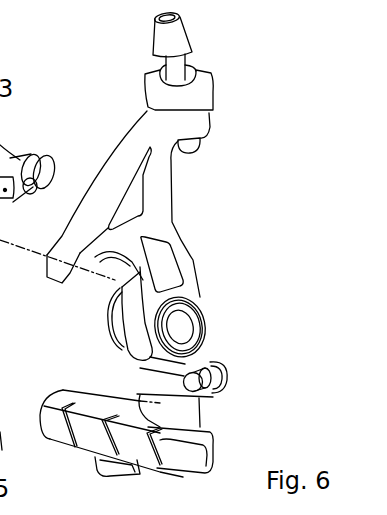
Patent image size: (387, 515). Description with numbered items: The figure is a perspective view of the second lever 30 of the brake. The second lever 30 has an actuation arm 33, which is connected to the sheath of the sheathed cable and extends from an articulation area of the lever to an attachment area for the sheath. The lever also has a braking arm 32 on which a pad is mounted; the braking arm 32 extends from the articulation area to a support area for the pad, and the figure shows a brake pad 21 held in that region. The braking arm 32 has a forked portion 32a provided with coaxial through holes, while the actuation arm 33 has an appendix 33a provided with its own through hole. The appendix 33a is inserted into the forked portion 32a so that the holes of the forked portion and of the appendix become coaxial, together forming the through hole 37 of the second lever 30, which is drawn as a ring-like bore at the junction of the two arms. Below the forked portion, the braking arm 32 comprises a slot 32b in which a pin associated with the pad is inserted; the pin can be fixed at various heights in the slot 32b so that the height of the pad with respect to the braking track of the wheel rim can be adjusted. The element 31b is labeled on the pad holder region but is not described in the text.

The second lever 30 is at (233, 167).
The actuation arm 33 is at (120, 162).
The forked portion 32a is at (117, 312).
The appendix 33a is at (128, 341).
The braking arm 32 is at (203, 358).
The through hole 37 is at (183, 325).
The slot 32b is at (213, 397).
The brake shoe holder 31b is at (200, 427).
The brake pad 21 is at (62, 423).